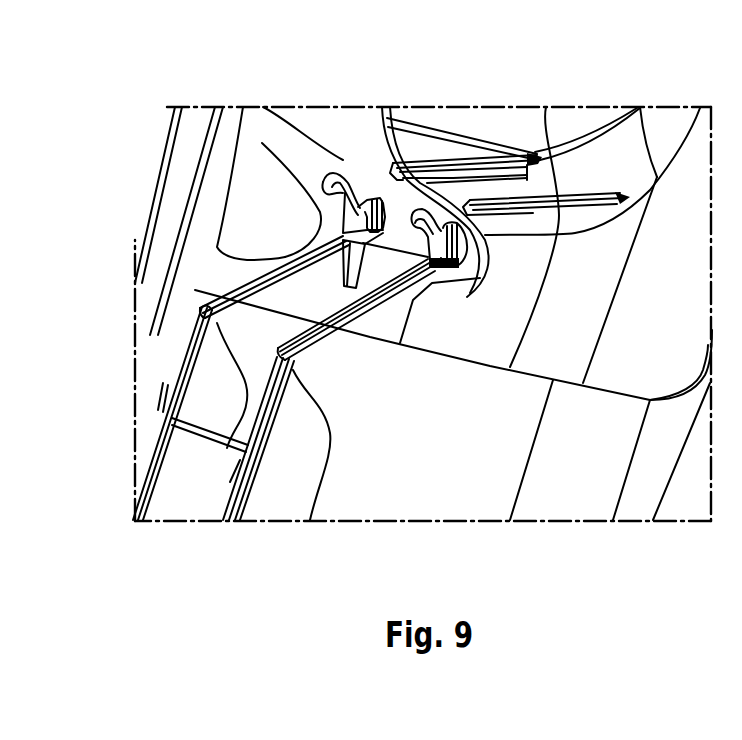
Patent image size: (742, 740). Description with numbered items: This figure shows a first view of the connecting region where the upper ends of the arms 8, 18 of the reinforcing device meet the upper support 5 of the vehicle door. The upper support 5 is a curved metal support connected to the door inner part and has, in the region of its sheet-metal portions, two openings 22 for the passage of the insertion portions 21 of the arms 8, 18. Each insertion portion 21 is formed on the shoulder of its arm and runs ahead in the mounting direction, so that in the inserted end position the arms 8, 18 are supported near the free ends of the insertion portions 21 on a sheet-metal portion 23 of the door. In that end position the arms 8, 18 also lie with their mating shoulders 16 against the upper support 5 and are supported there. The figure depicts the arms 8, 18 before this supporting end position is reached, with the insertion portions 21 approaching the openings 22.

The upper support 5 is at (358, 168).
The arm 8 is at (248, 303).
The arm 18 is at (345, 330).
The mating shoulder 16 is at (350, 230).
The insertion portion 21 is at (470, 162).
The opening 22 is at (443, 200).
The sheet-metal portion 23 is at (588, 167).